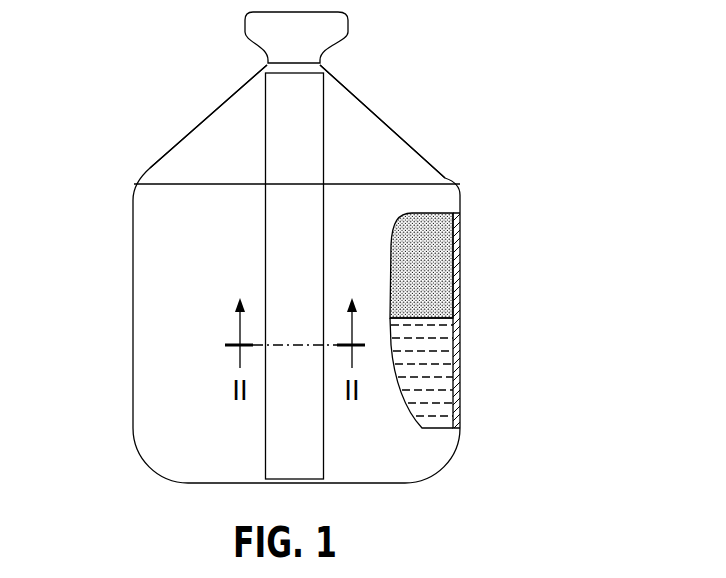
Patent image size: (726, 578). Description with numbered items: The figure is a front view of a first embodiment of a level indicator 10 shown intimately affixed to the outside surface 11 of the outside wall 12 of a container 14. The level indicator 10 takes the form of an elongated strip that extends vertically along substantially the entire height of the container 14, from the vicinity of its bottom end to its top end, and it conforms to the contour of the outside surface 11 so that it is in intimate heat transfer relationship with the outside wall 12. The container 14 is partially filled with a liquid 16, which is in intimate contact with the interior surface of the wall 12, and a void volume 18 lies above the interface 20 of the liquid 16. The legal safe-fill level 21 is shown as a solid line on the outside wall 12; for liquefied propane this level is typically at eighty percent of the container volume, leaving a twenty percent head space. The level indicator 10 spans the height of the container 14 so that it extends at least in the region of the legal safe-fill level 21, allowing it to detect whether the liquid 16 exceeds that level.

The level indicator 10 is at (256, 229).
The outside surface 11 is at (218, 288).
The outside wall 12 is at (460, 380).
The container 14 is at (398, 125).
The liquid 16 is at (444, 341).
The void volume 18 is at (428, 247).
The interface 20 is at (427, 318).
The legal safe-fill level 21 is at (420, 184).